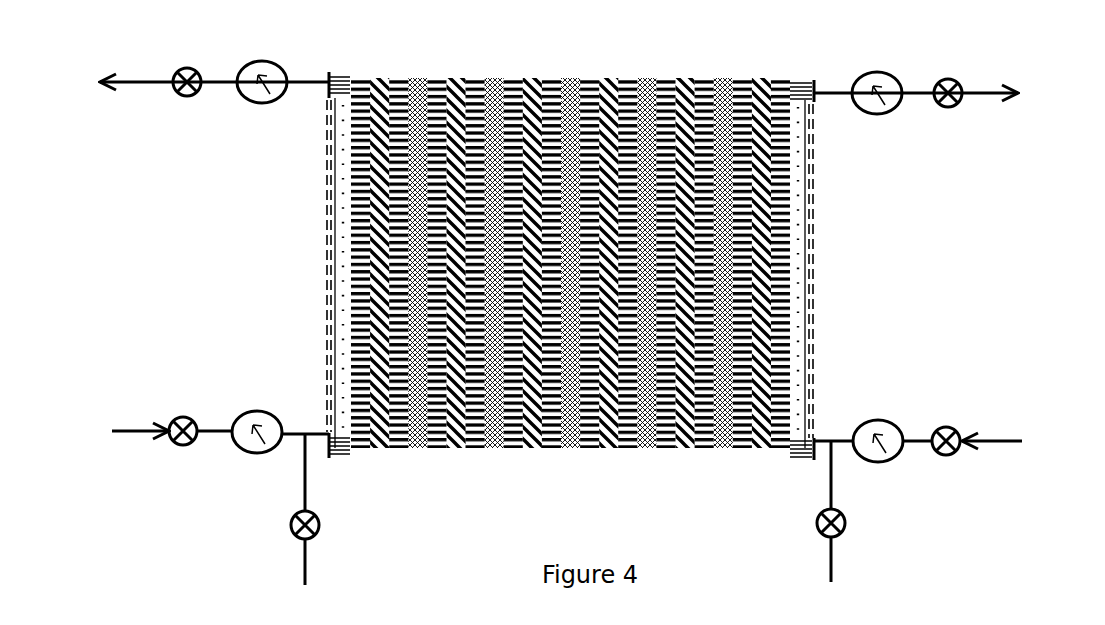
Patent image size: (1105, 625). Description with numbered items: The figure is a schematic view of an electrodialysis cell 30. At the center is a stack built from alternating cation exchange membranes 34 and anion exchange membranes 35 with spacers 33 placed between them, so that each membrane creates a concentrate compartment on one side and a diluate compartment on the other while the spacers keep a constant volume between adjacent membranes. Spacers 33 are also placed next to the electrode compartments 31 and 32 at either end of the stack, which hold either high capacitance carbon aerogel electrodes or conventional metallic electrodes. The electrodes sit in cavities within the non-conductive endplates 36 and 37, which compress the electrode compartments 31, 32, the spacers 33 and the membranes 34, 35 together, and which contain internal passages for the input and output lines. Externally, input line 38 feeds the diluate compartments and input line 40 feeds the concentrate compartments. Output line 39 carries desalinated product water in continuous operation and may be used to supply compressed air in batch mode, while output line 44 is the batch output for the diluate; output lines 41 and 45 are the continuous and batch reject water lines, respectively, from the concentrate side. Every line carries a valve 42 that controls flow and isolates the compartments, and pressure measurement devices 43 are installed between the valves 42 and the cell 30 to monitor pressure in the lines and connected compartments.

The electrodialysis cell 30 is at (571, 296).
The electrode compartment 31 is at (342, 314).
The electrode compartment 32 is at (800, 298).
The spacer 33 is at (398, 74).
The cation exchange membrane 34 is at (452, 452).
The anion exchange membrane 35 is at (420, 75).
The endplate 36 is at (310, 201).
The endplate 37 is at (830, 188).
The input line 38 is at (944, 444).
The output line 39 is at (186, 82).
The input line 40 is at (184, 431).
The output line 41 is at (943, 93).
The valve 42 is at (948, 78).
The pressure measurement device 43 is at (252, 455).
The output line 44 is at (836, 559).
The output line 45 is at (308, 557).